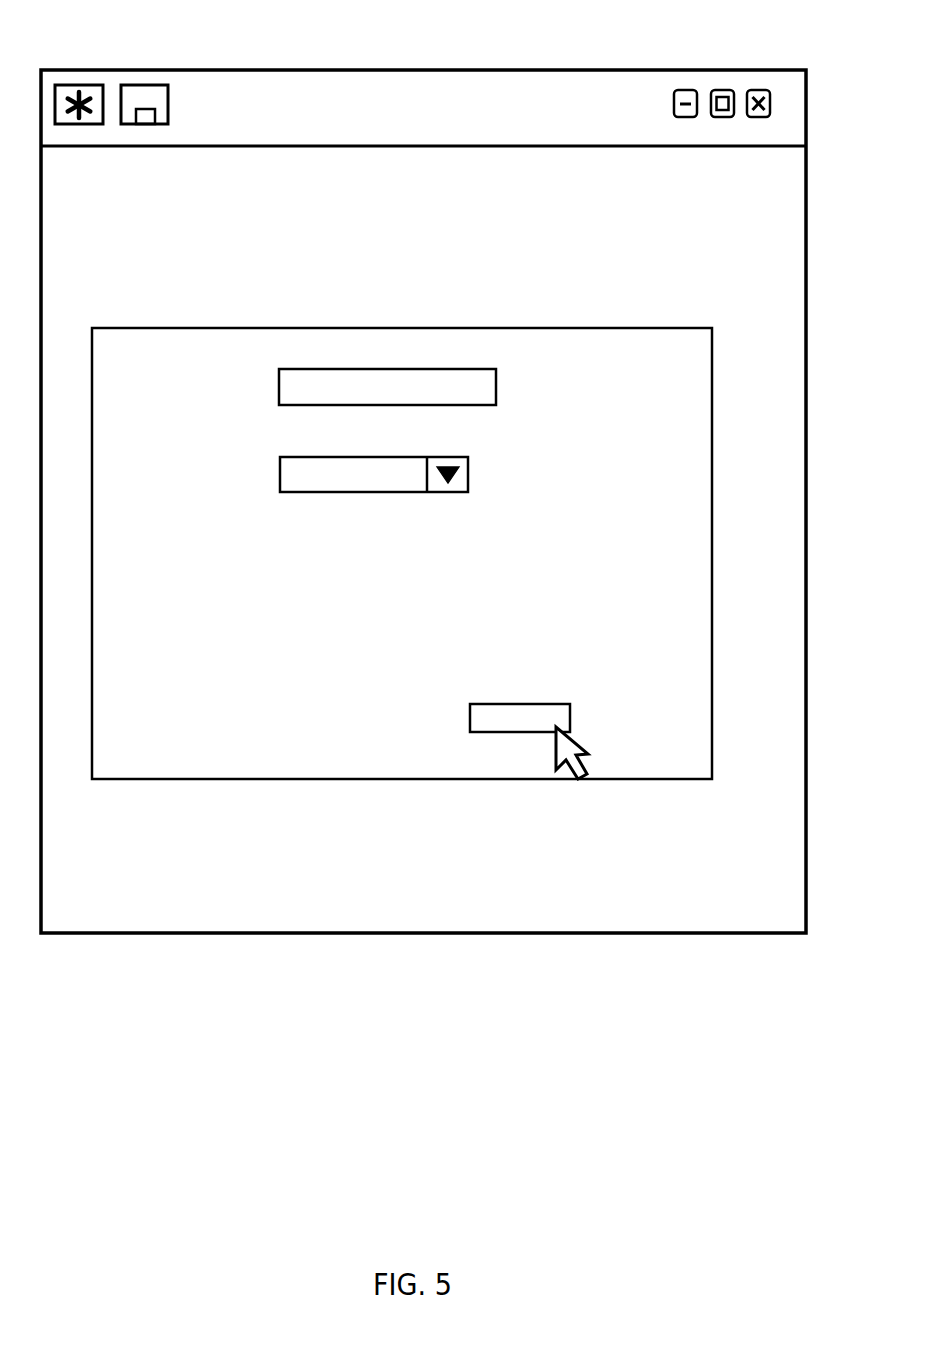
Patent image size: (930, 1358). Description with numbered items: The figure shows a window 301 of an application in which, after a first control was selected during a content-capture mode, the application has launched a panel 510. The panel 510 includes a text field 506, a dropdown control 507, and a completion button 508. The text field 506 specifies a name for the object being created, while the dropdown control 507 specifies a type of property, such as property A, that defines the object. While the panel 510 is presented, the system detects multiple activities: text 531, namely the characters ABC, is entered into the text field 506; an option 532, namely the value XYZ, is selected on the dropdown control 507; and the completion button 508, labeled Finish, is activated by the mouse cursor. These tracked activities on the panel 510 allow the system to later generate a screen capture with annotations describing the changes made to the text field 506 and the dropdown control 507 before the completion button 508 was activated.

The window 301 is at (405, 70).
The panel 510 is at (714, 540).
The text field 506 is at (497, 388).
The text 531 is at (298, 380).
The dropdown control 507 is at (470, 472).
The option 532 is at (364, 478).
The completion button 508 is at (572, 722).